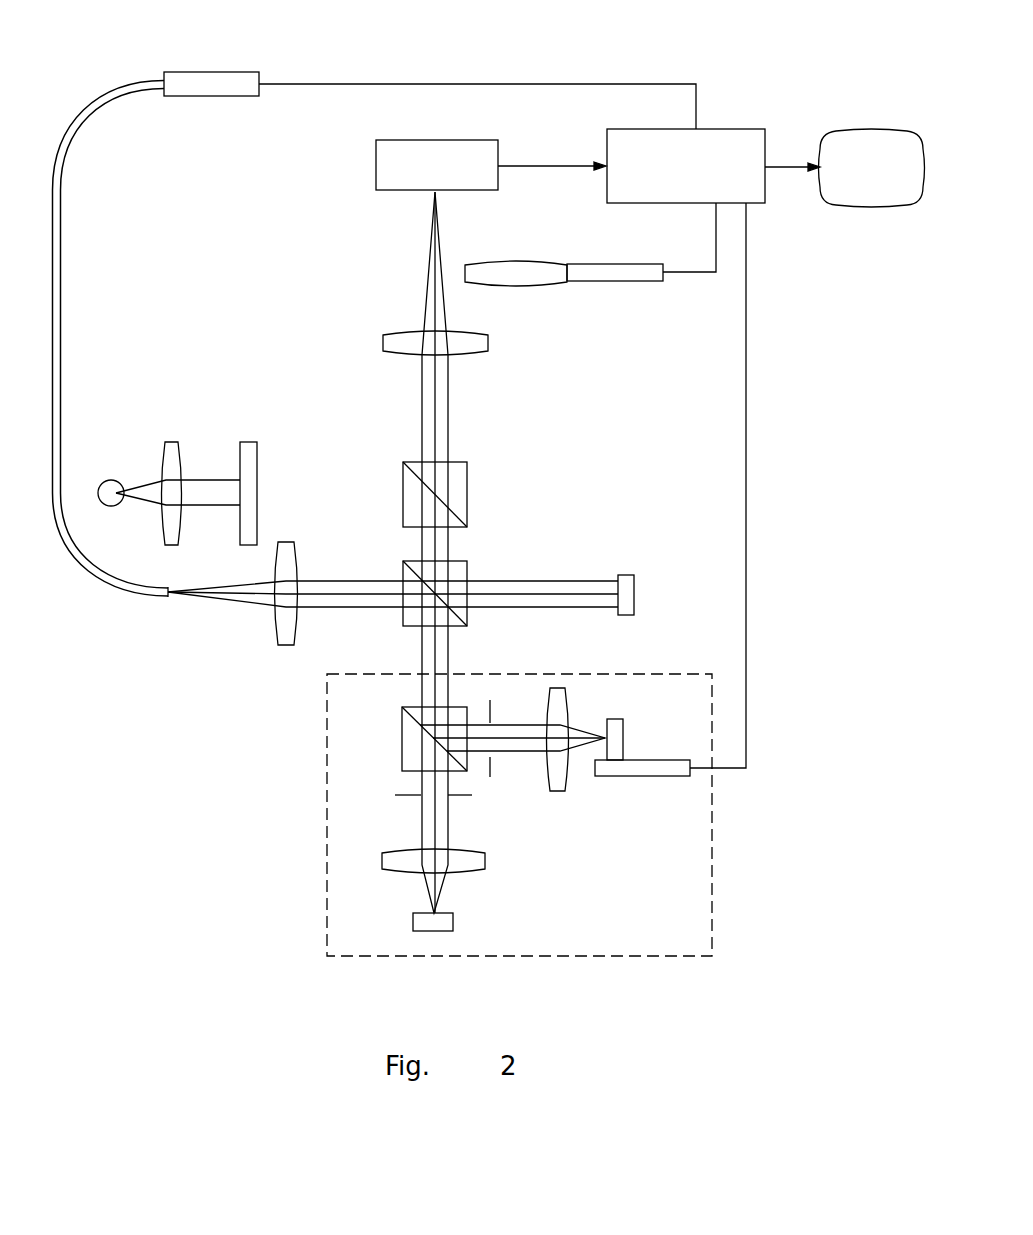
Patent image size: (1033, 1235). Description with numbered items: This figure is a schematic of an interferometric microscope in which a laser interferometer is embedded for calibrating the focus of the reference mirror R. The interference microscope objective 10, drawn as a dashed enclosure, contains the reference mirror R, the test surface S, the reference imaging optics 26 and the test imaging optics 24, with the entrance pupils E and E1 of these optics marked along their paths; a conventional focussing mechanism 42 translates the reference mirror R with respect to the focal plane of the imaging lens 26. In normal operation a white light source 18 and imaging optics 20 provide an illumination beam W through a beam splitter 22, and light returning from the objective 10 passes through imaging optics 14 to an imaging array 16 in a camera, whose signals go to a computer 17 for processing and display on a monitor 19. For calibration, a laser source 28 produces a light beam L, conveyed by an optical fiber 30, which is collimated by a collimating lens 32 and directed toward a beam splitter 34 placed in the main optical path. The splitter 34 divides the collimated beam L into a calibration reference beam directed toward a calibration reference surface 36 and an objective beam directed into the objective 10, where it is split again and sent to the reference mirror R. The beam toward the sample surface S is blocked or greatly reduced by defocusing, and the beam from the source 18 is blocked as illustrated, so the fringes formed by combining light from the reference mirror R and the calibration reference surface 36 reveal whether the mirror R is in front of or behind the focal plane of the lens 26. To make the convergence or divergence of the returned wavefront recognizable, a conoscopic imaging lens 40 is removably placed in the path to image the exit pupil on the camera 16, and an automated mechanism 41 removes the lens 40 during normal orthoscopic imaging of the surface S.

The interferometric microscope objective 10 is at (712, 890).
The imaging optics 14 is at (478, 343).
The imaging array 16 is at (383, 170).
The computer 17 is at (742, 138).
The white light source 18 is at (108, 486).
The monitor 19 is at (872, 135).
The imaging optics 20 is at (168, 448).
The beam splitter 22 is at (458, 486).
The test imaging optics 24 is at (478, 861).
The reference imaging optics 26 is at (560, 701).
The laser source 28 is at (217, 78).
The optical fiber 30 is at (112, 588).
The collimating lens 32 is at (290, 548).
The beam splitter 34 is at (458, 571).
The calibration reference surface 36 is at (628, 592).
The conoscopic imaging lens 40 is at (518, 265).
The automated mechanism 41 is at (625, 276).
The focussing mechanism 42 is at (665, 773).
The entrance pupil E is at (490, 713).
The entrance pupil E1 is at (458, 793).
The light beam L is at (222, 597).
The reference mirror R is at (618, 732).
The test surface S is at (453, 921).
The light beam W is at (436, 649).